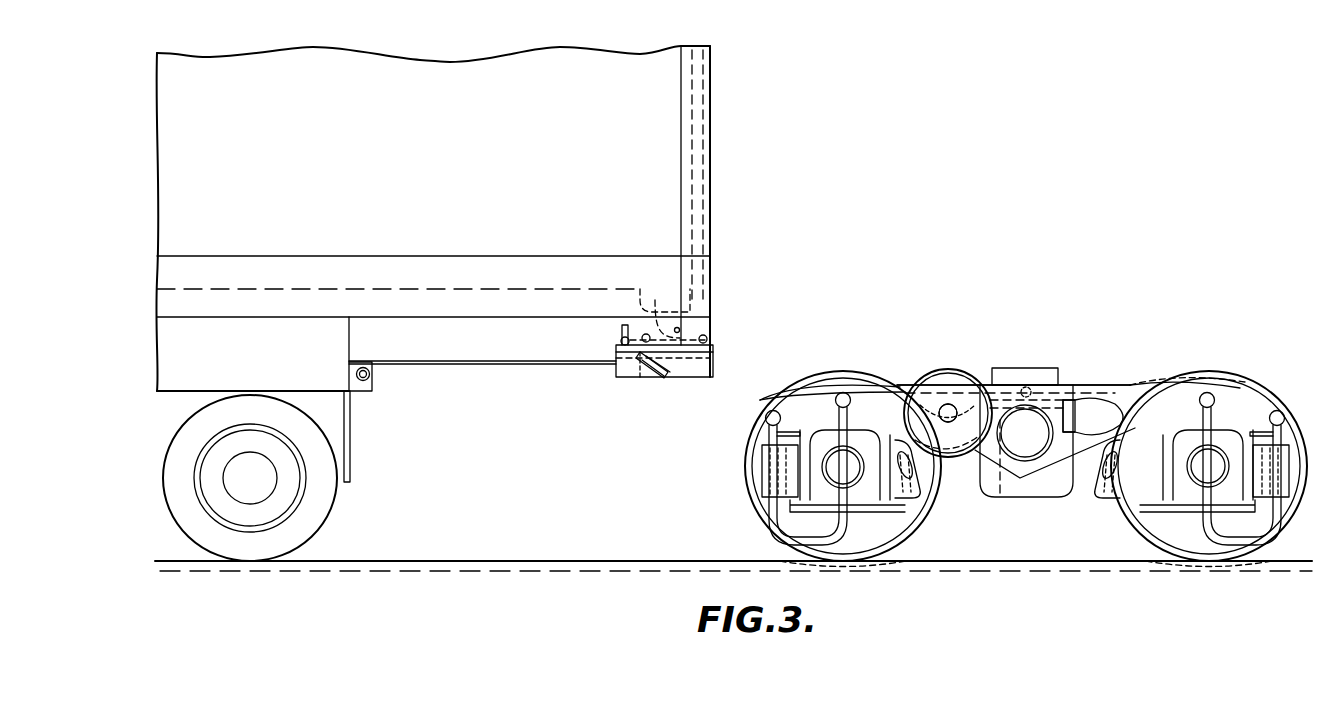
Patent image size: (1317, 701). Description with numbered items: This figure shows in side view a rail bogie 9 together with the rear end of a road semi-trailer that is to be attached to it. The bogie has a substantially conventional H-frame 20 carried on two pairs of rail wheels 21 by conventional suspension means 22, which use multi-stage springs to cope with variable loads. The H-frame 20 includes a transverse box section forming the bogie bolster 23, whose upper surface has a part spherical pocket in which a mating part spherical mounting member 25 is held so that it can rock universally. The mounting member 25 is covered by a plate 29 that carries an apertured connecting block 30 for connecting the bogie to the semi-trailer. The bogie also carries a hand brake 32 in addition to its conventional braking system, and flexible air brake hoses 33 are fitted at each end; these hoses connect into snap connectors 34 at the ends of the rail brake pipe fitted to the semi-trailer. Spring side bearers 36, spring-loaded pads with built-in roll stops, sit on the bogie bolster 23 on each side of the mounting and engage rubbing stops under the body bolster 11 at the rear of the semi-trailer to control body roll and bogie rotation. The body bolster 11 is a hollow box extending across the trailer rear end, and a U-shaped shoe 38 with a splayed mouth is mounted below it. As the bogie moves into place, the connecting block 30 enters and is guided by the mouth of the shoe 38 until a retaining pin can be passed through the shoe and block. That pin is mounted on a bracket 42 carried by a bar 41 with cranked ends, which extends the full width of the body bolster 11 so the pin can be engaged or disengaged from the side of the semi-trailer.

The rail bogie 9 is at (1088, 380).
The body bolster 11 is at (718, 358).
The H-frame 20 is at (1128, 385).
The rail wheels 21 is at (822, 372).
The suspension means 22 is at (762, 470).
The bogie bolster 23 is at (1035, 490).
The mounting member 25 is at (1000, 420).
The plate 29 is at (968, 398).
The connecting block 30 is at (1043, 392).
The hand brake 32 is at (918, 378).
The flexible air brake hoses 33 is at (778, 520).
The snap connectors 34 is at (372, 378).
The spring side bearers 36 is at (1010, 368).
The U-shaped shoe 38 is at (616, 370).
The bar 41 is at (618, 332).
The bracket 42 is at (656, 372).